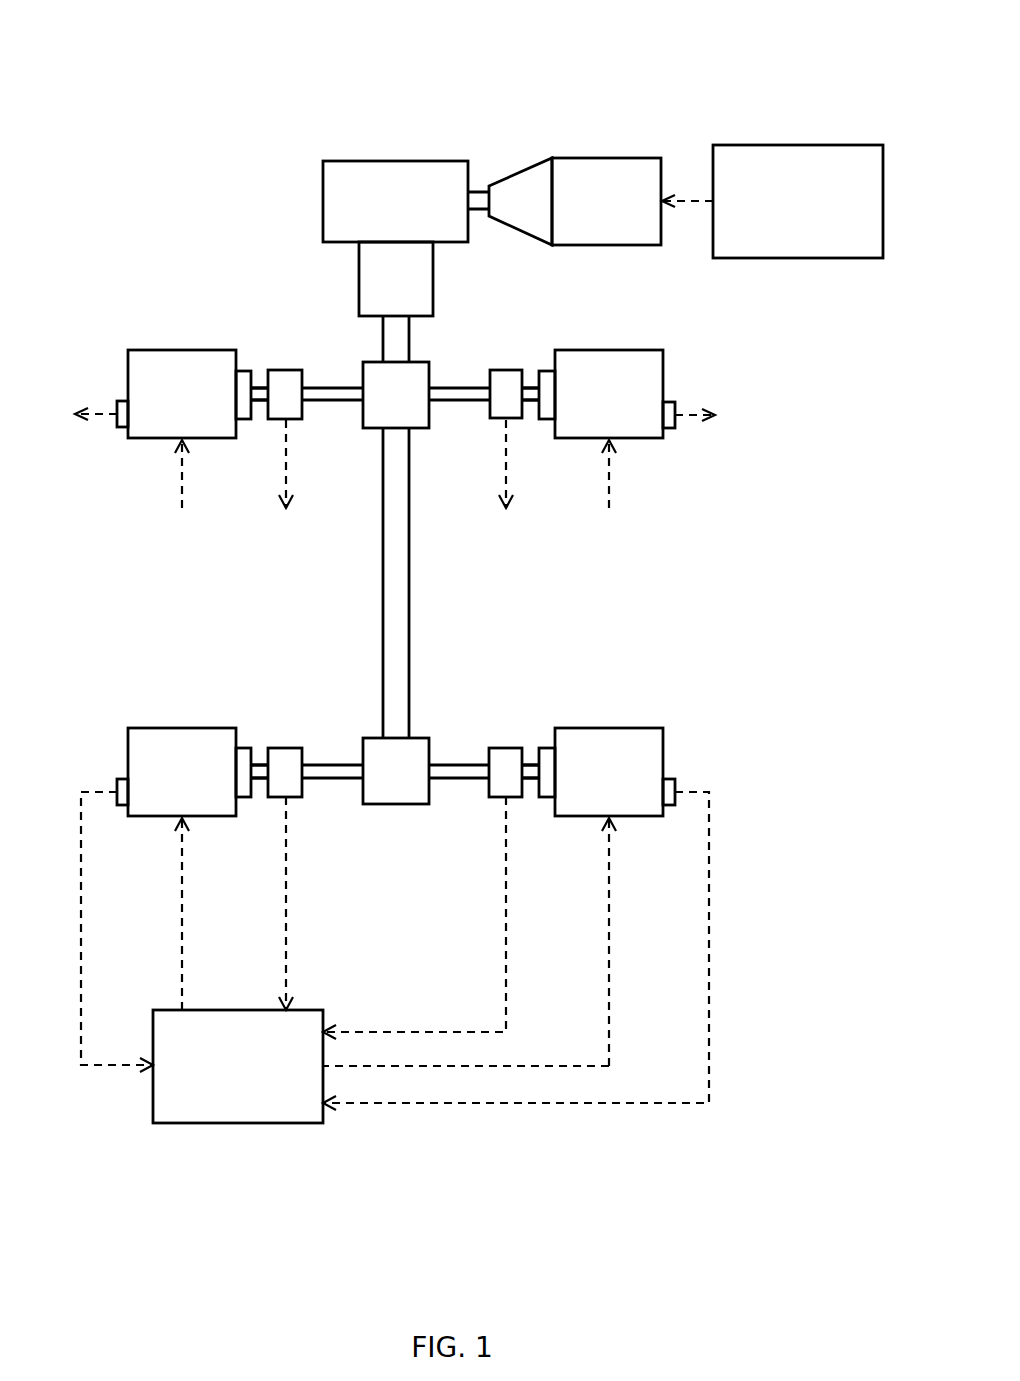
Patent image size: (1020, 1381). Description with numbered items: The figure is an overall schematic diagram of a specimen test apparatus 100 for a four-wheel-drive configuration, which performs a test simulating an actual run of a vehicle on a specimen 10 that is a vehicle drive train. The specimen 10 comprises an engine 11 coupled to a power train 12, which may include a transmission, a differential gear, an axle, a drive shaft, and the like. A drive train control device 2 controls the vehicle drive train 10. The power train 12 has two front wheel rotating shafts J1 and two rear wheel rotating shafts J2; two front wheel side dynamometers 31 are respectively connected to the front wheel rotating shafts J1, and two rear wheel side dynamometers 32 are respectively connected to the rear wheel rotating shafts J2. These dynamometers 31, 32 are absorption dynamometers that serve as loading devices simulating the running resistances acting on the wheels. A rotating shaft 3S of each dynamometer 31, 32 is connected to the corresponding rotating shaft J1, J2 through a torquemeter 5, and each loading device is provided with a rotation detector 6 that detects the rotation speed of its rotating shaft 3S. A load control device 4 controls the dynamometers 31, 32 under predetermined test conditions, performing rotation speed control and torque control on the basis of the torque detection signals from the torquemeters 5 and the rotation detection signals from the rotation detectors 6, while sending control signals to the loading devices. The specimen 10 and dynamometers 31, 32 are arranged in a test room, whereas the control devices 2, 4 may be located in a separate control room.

The specimen test apparatus 100 is at (260, 97).
The specimen 10 is at (592, 103).
The power train 12 is at (412, 158).
The engine 11 is at (578, 156).
The drive train control device 2 is at (798, 144).
The front wheel side dynamometer 31 is at (181, 348).
The rear wheel side dynamometer 32 is at (181, 726).
The torquemeter 5 is at (285, 368).
The rotation detector 6 is at (115, 403).
The rotating shaft 3S is at (259, 403).
The front wheel rotating shaft J1 is at (331, 403).
The rear wheel rotating shaft J2 is at (331, 781).
The load control device 4 is at (238, 1125).